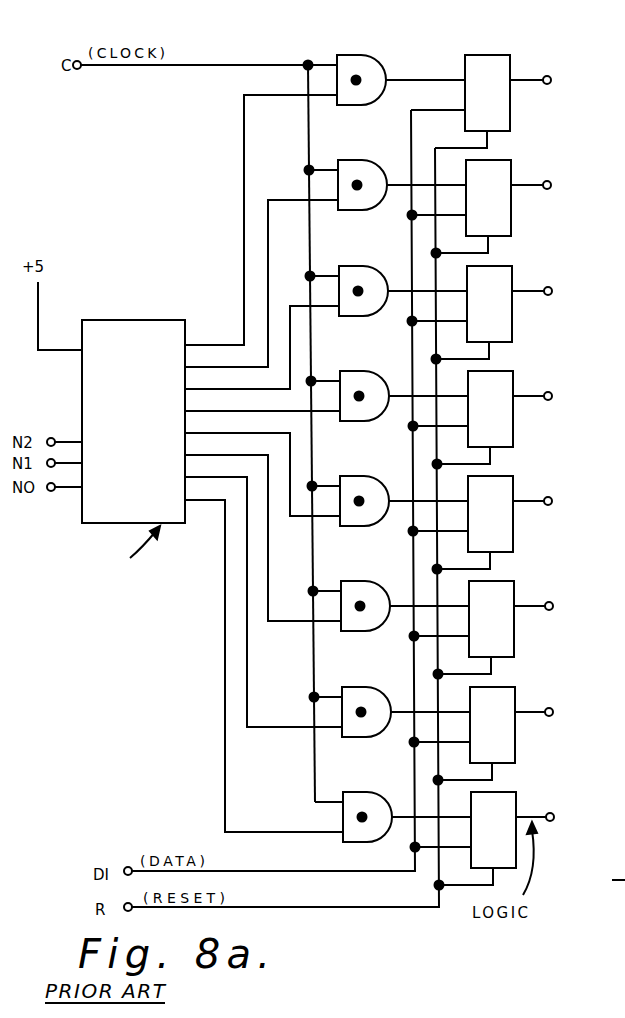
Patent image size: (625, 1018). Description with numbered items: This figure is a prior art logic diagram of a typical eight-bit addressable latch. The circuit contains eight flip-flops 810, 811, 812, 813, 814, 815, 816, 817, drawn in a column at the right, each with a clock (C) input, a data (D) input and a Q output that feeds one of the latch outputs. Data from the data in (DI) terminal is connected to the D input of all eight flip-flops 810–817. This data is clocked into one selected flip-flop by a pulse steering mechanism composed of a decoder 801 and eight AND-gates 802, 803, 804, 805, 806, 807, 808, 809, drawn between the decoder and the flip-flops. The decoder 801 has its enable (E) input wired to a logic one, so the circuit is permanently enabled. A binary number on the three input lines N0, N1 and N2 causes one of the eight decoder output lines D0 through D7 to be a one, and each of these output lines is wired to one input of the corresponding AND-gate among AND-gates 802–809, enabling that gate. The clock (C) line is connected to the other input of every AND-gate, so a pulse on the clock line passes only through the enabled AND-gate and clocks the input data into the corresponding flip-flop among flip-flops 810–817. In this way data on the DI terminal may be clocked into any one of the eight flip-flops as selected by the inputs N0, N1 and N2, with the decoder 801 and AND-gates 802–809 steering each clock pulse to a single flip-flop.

The decoder 801 is at (137, 320).
The AND-gate 802 is at (370, 792).
The AND-gate 803 is at (369, 687).
The AND-gate 804 is at (368, 581).
The AND-gate 805 is at (367, 476).
The AND-gate 806 is at (367, 371).
The AND-gate 807 is at (366, 266).
The AND-gate 808 is at (365, 160).
The AND-gate 809 is at (364, 55).
The flip-flop 810 is at (518, 793).
The flip-flop 811 is at (517, 688).
The flip-flop 812 is at (517, 582).
The flip-flop 813 is at (516, 477).
The flip-flop 814 is at (516, 372).
The flip-flop 815 is at (515, 267).
The flip-flop 816 is at (514, 161).
The flip-flop 817 is at (479, 55).